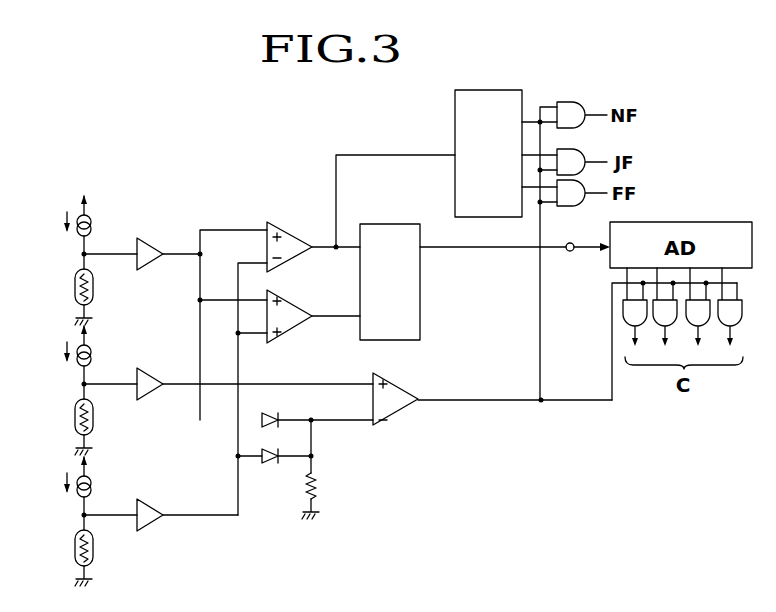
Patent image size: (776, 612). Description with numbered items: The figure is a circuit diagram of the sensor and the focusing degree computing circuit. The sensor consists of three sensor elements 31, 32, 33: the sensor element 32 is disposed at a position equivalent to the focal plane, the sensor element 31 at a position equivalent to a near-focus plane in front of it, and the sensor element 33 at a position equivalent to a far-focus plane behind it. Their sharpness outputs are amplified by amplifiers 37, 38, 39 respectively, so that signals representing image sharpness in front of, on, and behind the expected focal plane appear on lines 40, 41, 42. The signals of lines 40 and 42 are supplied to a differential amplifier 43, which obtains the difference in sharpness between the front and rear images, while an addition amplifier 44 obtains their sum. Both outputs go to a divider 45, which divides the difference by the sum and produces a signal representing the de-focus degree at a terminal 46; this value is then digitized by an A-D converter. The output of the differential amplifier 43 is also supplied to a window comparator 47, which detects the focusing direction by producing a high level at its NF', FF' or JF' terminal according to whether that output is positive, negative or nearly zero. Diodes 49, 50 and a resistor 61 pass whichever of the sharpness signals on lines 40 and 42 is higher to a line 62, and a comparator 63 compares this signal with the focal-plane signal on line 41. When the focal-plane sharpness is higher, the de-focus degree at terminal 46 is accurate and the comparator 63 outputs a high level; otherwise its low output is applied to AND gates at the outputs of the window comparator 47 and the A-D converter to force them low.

The sensor element 31 is at (74, 292).
The sensor element 32 is at (74, 422).
The sensor element 33 is at (74, 552).
The amplifier 37 is at (152, 244).
The amplifier 38 is at (152, 374).
The amplifier 39 is at (152, 505).
The line 40 is at (177, 257).
The line 41 is at (177, 387).
The line 42 is at (183, 518).
The differential amplifier 43 is at (285, 226).
The addition amplifier 44 is at (292, 298).
The divider 45 is at (385, 224).
The terminal 46 is at (570, 252).
The window comparator 47 is at (490, 90).
The diode 49 is at (271, 413).
The diode 50 is at (270, 463).
The resistor 61 is at (318, 485).
The line 62 is at (345, 421).
The comparator 63 is at (405, 380).